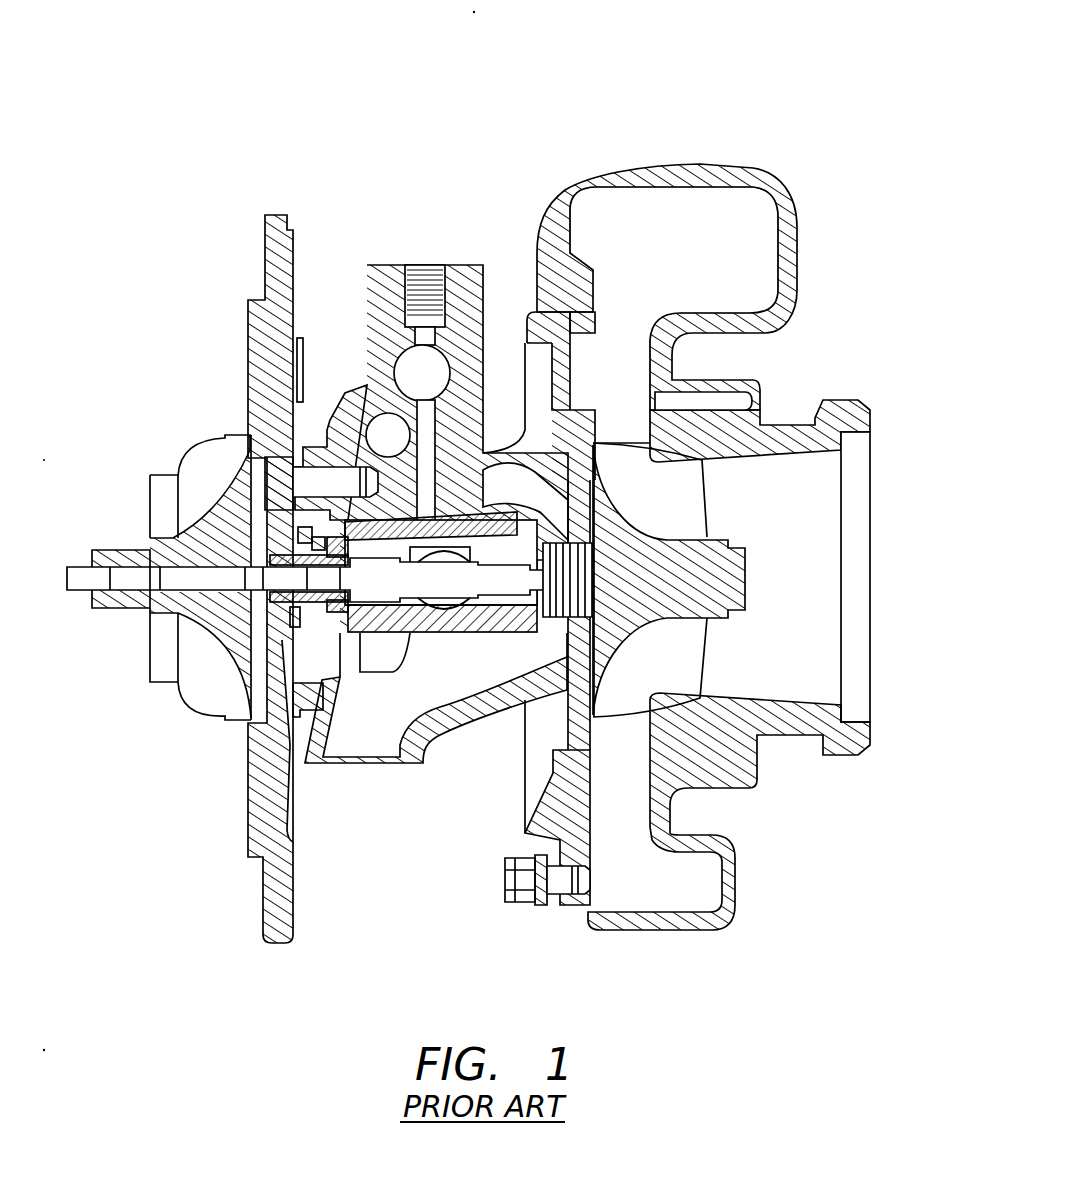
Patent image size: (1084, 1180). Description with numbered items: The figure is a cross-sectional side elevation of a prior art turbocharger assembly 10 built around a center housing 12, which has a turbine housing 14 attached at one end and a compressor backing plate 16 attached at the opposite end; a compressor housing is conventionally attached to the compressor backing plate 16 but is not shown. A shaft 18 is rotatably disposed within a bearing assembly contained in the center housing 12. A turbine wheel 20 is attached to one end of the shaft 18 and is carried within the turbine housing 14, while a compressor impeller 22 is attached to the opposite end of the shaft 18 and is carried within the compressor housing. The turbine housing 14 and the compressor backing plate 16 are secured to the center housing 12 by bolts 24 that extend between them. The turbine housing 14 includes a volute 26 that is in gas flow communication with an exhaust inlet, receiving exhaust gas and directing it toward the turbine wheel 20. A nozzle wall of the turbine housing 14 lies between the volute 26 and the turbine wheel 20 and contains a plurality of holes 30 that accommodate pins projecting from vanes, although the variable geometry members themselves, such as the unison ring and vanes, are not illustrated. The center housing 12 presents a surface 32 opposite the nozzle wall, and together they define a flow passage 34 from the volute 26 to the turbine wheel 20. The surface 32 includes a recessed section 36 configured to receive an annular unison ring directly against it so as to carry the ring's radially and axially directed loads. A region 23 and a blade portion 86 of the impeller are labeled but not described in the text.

The turbocharger assembly 10 is at (550, 134).
The center housing 12 is at (467, 717).
The turbine housing 14 is at (703, 547).
The compressor backing plate 16 is at (246, 798).
The shaft 18 is at (423, 584).
The turbine wheel 20 is at (688, 552).
The compressor impeller 22 is at (167, 573).
The turbine housing flange 23 is at (650, 762).
The bolts 24 is at (272, 474).
The volute 26 is at (688, 248).
The holes 30 is at (700, 408).
The surface 32 is at (600, 720).
The flow passage 34 is at (619, 350).
The recessed section 36 is at (577, 382).
The compressor wheel blade 86 is at (195, 477).